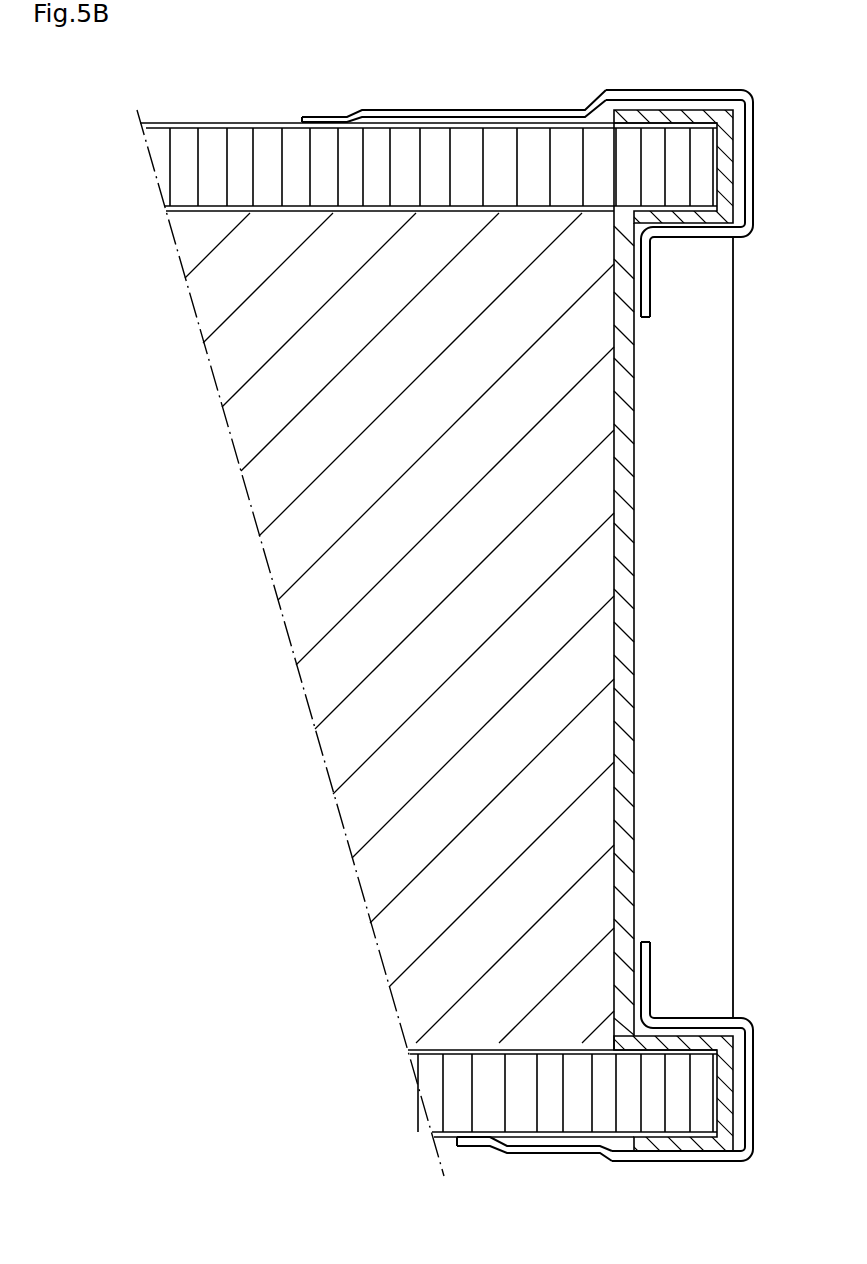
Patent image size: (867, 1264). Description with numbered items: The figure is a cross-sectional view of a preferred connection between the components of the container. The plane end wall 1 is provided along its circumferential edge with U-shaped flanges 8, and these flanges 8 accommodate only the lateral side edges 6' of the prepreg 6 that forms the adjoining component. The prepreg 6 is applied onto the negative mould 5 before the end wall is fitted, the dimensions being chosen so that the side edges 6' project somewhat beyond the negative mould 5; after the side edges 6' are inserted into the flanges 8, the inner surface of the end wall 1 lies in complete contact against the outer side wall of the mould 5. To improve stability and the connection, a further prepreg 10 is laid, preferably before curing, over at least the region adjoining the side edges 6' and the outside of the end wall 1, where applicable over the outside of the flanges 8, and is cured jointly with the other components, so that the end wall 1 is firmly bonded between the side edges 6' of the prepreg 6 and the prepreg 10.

The end wall 1 is at (707, 635).
The negative mould 5 is at (343, 637).
The prepreg 6 is at (428, 627).
The side edges 6' is at (433, 632).
The U-shaped flanges 8 is at (753, 103).
The further prepreg 10 is at (461, 118).